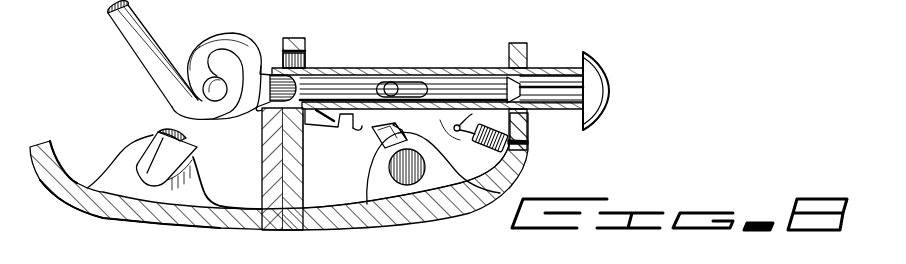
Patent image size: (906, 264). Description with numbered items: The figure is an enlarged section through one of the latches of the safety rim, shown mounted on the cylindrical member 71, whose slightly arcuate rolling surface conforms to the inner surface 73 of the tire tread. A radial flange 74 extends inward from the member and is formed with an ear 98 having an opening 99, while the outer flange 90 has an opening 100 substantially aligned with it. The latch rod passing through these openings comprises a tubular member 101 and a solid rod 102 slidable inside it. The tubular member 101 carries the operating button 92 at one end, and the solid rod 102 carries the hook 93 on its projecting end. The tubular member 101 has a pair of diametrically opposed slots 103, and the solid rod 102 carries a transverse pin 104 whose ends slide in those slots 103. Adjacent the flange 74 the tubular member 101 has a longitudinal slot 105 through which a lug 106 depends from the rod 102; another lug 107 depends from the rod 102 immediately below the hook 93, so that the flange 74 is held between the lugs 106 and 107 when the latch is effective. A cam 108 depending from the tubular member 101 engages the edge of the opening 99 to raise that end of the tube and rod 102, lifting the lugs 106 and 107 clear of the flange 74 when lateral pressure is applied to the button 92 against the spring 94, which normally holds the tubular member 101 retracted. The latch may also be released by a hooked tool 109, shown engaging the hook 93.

The cylindrical member 71 is at (223, 222).
The inner surface of tread portion 73 is at (378, 215).
The radial flange 74 is at (262, 183).
The outer flange 90 is at (540, 29).
The operating button 92 is at (607, 82).
The hook 93 is at (235, 36).
The spring 94 is at (492, 151).
The ear 98 is at (295, 38).
The opening 99 is at (306, 58).
The opening 100 is at (530, 68).
The tubular member 101 is at (462, 68).
The solid rod 102 is at (345, 86).
The slot 103 is at (420, 86).
The transverse pin 104 is at (392, 82).
The longitudinal slot 105 is at (339, 123).
The lug 106 is at (303, 165).
The lug 107 is at (249, 110).
The cam 108 is at (357, 132).
The hooked tool 109 is at (142, 64).